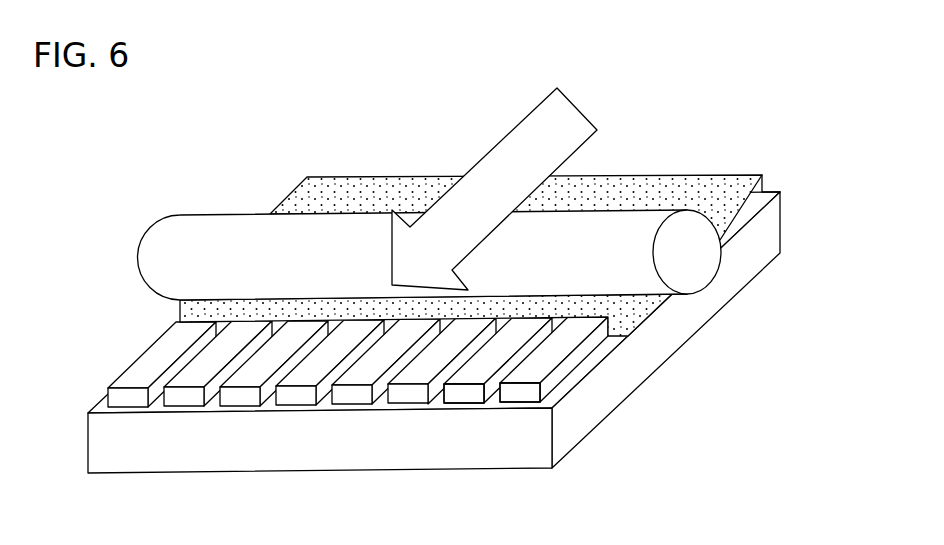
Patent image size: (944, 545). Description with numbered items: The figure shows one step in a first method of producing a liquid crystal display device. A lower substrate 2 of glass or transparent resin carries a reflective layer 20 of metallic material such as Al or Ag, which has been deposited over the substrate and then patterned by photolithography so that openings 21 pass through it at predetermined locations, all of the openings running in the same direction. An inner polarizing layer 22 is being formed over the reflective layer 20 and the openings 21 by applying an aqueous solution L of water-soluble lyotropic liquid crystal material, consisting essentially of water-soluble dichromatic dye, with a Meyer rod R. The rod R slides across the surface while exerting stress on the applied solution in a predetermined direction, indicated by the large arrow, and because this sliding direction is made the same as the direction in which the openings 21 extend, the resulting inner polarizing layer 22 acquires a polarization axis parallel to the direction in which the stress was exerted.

The lower substrate 2 is at (767, 228).
The reflective layer 20 is at (465, 394).
The openings 21 is at (193, 359).
The inner polarizing layer 22 is at (630, 192).
The aqueous solution L is at (767, 191).
The Meyer rod R is at (710, 267).